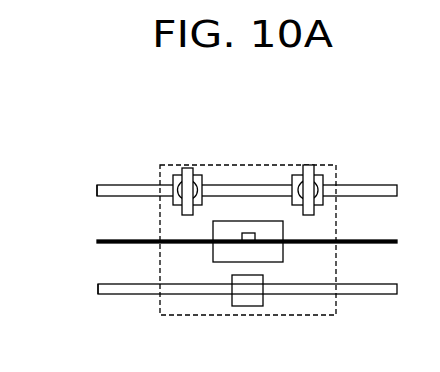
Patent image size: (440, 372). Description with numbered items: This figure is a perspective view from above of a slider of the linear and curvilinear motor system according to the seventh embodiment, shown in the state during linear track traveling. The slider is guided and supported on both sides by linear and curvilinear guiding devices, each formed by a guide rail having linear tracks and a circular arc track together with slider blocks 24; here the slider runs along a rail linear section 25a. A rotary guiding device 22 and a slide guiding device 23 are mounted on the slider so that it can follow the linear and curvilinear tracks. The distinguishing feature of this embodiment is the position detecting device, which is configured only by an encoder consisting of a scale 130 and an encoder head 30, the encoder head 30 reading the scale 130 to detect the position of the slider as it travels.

The rotary guiding device 22 is at (173, 185).
The slide guiding device 23 is at (185, 168).
The slider block 24 is at (206, 233).
The rail linear section 25a is at (99, 190).
The encoder head 30 is at (250, 233).
The scale 130 is at (361, 240).